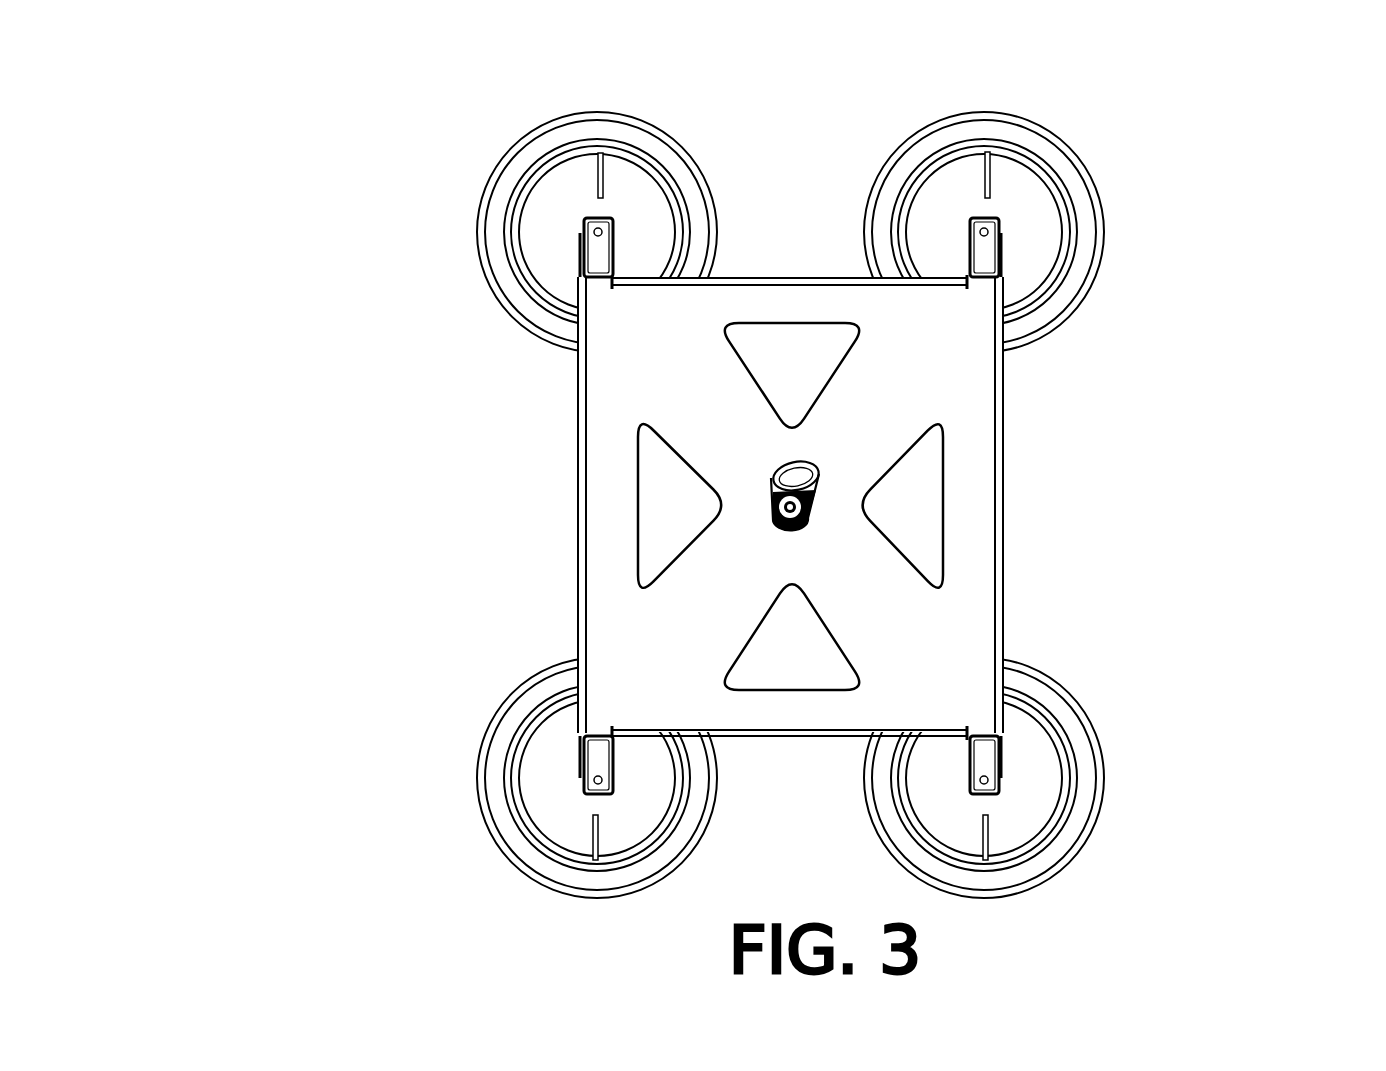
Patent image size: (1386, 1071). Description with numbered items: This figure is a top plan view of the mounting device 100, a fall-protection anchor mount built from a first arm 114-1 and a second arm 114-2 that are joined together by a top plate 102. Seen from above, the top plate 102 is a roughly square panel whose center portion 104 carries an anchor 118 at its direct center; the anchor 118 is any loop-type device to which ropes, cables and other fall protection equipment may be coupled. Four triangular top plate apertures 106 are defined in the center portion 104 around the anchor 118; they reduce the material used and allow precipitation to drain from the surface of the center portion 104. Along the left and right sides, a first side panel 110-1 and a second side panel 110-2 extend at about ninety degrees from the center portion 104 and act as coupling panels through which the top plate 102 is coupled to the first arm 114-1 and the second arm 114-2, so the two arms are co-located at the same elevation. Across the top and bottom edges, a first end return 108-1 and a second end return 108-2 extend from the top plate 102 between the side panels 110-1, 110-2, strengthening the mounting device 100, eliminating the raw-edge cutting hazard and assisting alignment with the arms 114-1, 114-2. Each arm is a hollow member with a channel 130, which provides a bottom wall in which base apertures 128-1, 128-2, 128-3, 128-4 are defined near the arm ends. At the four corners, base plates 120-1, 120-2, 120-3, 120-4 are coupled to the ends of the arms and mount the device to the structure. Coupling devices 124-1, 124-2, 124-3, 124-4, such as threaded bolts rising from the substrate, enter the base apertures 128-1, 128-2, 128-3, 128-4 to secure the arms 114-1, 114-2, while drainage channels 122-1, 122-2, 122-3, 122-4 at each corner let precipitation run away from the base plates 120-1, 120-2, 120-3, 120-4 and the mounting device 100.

The mounting device 100 is at (197, 100).
The top plate 102 is at (578, 392).
The center portion 104 is at (603, 447).
The top plate apertures 106 is at (813, 373).
The first end return 108-1 is at (792, 732).
The second end return 108-2 is at (792, 278).
The first side panel 110-1 is at (578, 573).
The second side panel 110-2 is at (1004, 575).
The first arm 114-1 is at (598, 256).
The second arm 114-2 is at (983, 256).
The anchor 118 is at (818, 470).
The first base plate 120-1 is at (553, 829).
The second base plate 120-2 is at (553, 181).
The third base plate 120-3 is at (1028, 181).
The fourth base plate 120-4 is at (1028, 829).
The drainage channel 122-1 is at (598, 861).
The drainage channel 122-2 is at (598, 149).
The drainage channel 122-3 is at (983, 149).
The drainage channel 122-4 is at (983, 861).
The first coupling device 124-1 is at (585, 791).
The second coupling device 124-2 is at (585, 219).
The third coupling device 124-3 is at (996, 219).
The fourth coupling device 124-4 is at (996, 791).
The first base aperture 128-1 is at (606, 760).
The second base aperture 128-2 is at (606, 260).
The third base aperture 128-3 is at (974, 260).
The fourth base aperture 128-4 is at (977, 750).
The channel 130 is at (613, 219).